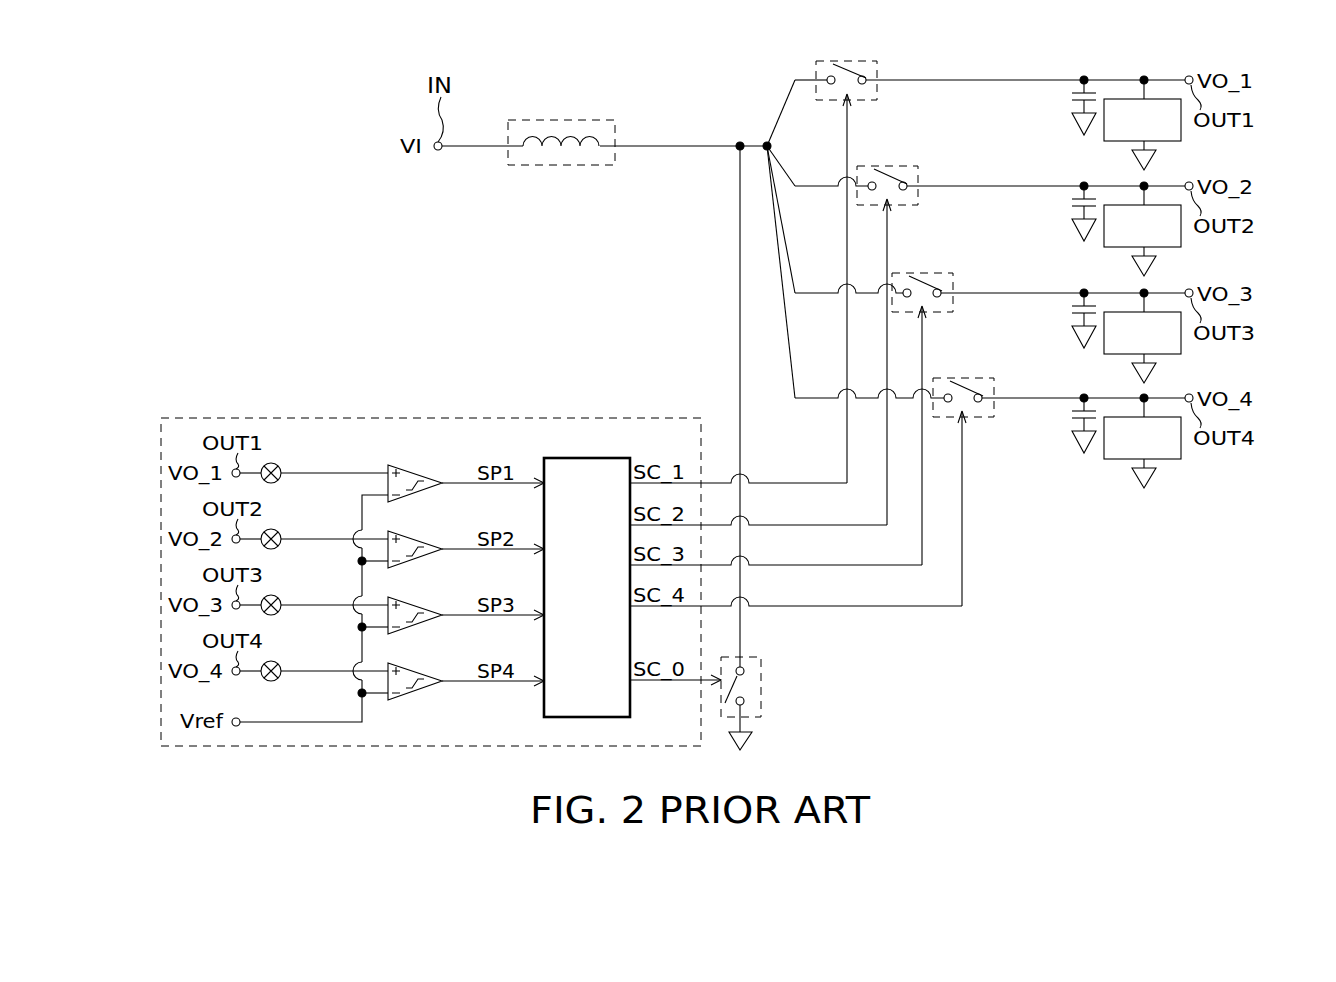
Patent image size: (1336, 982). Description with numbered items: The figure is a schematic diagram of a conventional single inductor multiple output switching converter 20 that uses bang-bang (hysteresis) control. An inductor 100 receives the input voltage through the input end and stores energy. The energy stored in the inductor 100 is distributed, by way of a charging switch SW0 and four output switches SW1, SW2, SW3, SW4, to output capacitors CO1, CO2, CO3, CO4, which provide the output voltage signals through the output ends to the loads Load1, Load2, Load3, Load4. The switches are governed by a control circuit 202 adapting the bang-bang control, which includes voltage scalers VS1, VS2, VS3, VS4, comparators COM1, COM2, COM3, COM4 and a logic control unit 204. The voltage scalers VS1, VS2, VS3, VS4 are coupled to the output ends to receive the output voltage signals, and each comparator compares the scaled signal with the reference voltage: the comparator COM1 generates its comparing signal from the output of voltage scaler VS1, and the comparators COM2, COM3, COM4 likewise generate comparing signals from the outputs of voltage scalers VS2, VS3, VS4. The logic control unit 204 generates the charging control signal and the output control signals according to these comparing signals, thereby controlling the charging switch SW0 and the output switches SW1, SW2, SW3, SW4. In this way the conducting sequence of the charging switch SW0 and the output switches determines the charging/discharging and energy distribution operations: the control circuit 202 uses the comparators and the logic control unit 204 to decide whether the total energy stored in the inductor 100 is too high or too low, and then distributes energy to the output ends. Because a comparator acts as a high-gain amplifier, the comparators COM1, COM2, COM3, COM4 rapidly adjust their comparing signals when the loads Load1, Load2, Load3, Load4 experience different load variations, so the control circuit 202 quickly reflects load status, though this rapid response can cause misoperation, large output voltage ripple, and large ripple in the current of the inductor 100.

The SIMO switching converter 20 is at (256, 100).
The inductor 100 is at (585, 120).
The control circuit 202 is at (500, 417).
The logic control unit 204 is at (587, 457).
The charging switch SW0 is at (762, 682).
The output switch SW1 is at (877, 62).
The output switch SW2 is at (918, 167).
The output switch SW3 is at (953, 274).
The output switch SW4 is at (994, 379).
The comparator COM1 is at (422, 461).
The comparator COM2 is at (422, 527).
The comparator COM3 is at (422, 593).
The comparator COM4 is at (422, 659).
The voltage scaler VS1 is at (277, 466).
The voltage scaler VS2 is at (277, 532).
The voltage scaler VS3 is at (277, 598).
The voltage scaler VS4 is at (277, 664).
The output capacitor CO1 is at (1072, 98).
The output capacitor CO2 is at (1072, 204).
The output capacitor CO3 is at (1072, 311).
The output capacitor CO4 is at (1072, 416).
The load Load1 is at (1142, 125).
The load Load2 is at (1142, 231).
The load Load3 is at (1142, 338).
The load Load4 is at (1142, 443).